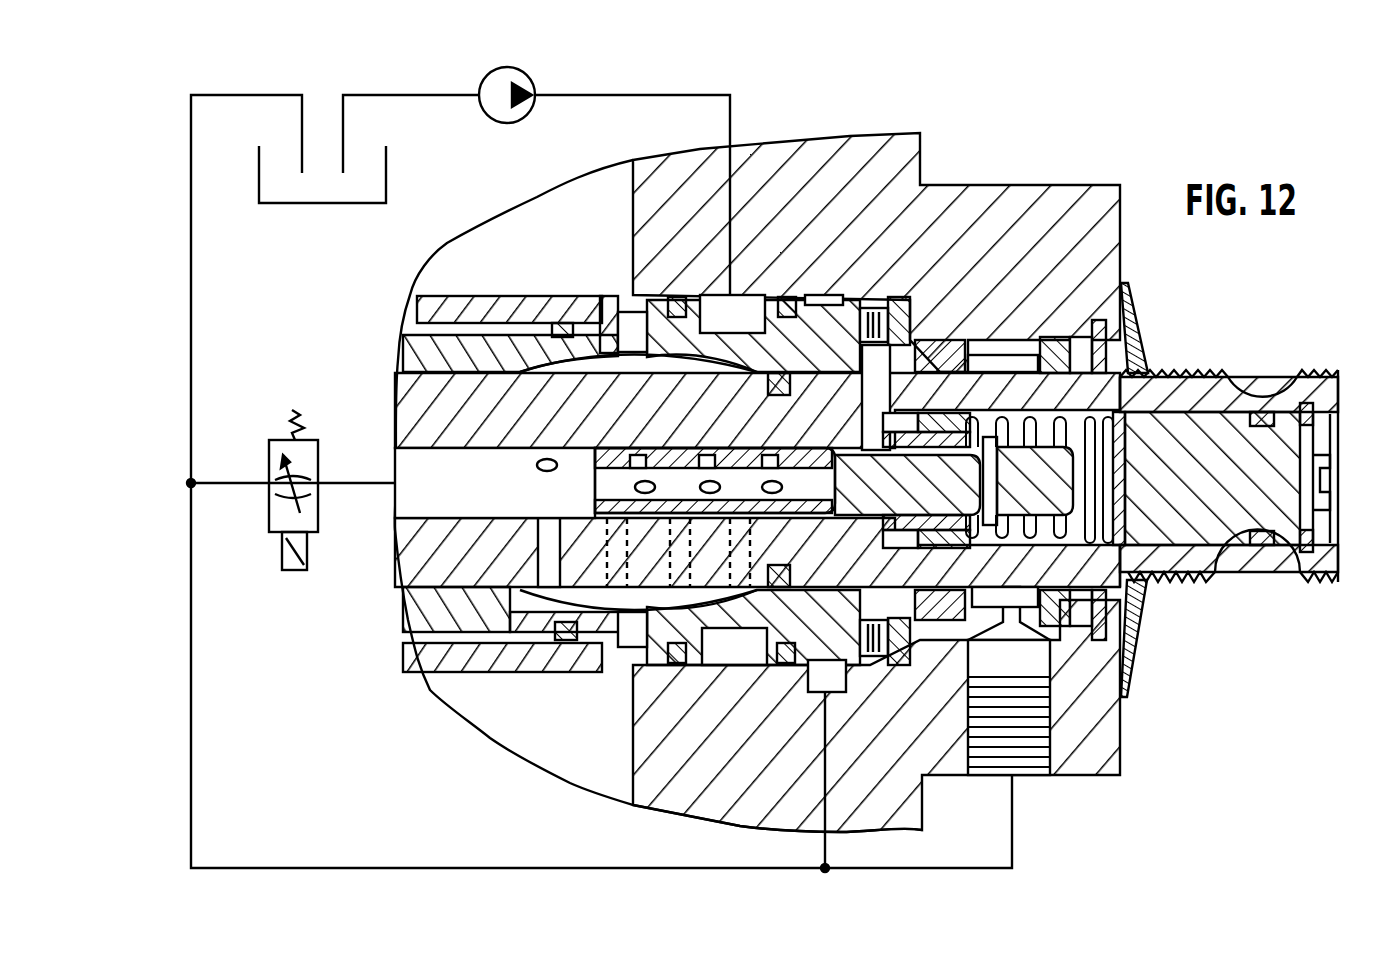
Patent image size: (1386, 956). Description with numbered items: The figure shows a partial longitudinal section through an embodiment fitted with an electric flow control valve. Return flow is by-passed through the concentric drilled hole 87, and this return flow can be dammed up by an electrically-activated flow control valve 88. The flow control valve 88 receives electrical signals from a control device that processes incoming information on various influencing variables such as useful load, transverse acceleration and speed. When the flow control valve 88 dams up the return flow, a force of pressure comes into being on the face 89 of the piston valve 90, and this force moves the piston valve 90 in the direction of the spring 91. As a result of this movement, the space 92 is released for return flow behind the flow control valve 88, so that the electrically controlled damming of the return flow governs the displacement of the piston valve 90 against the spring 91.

The concentric drilled hole 87 is at (448, 497).
The flow control valve 88 is at (307, 455).
The face 89 is at (590, 508).
The piston valve 90 is at (690, 512).
The spring 91 is at (1157, 547).
The space 92 is at (1145, 362).